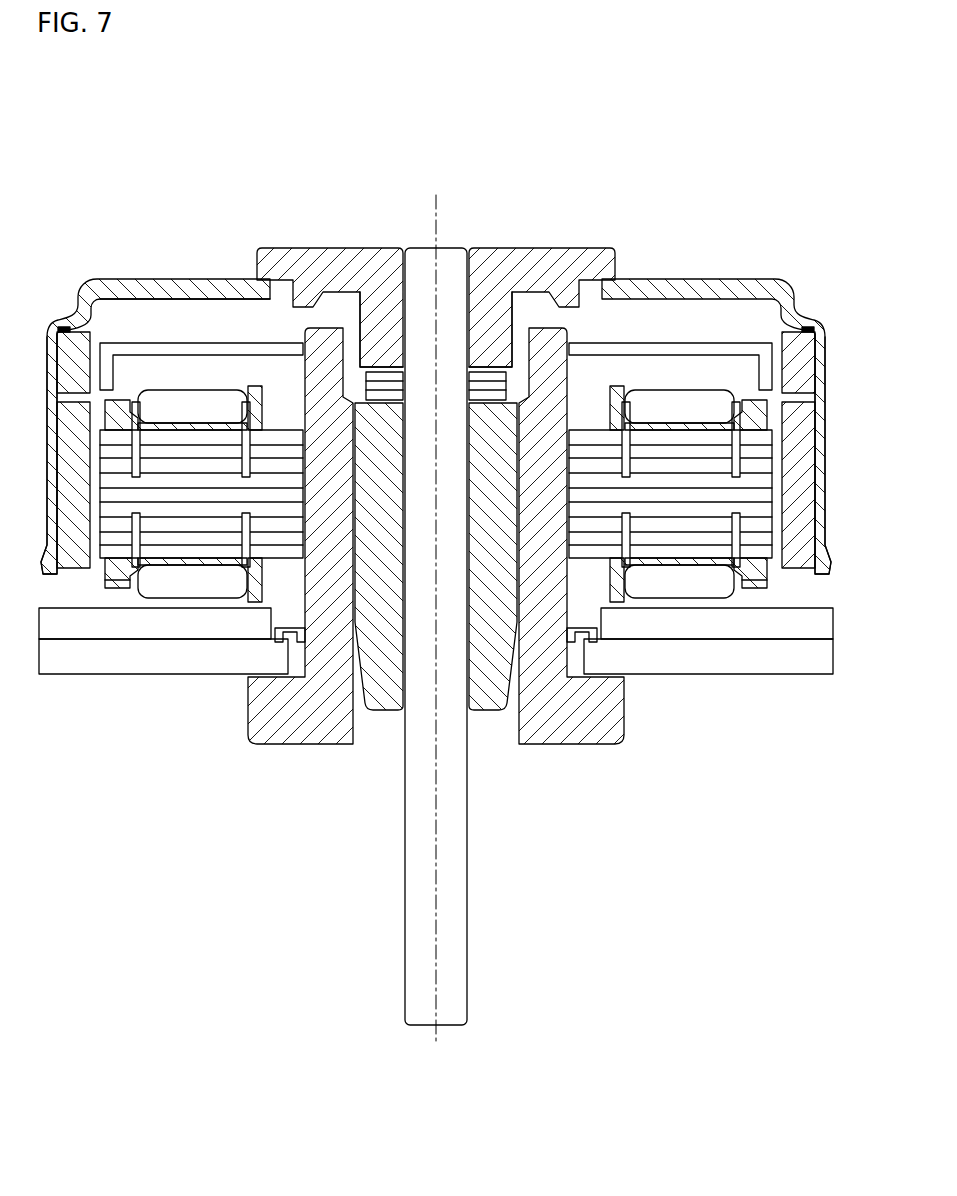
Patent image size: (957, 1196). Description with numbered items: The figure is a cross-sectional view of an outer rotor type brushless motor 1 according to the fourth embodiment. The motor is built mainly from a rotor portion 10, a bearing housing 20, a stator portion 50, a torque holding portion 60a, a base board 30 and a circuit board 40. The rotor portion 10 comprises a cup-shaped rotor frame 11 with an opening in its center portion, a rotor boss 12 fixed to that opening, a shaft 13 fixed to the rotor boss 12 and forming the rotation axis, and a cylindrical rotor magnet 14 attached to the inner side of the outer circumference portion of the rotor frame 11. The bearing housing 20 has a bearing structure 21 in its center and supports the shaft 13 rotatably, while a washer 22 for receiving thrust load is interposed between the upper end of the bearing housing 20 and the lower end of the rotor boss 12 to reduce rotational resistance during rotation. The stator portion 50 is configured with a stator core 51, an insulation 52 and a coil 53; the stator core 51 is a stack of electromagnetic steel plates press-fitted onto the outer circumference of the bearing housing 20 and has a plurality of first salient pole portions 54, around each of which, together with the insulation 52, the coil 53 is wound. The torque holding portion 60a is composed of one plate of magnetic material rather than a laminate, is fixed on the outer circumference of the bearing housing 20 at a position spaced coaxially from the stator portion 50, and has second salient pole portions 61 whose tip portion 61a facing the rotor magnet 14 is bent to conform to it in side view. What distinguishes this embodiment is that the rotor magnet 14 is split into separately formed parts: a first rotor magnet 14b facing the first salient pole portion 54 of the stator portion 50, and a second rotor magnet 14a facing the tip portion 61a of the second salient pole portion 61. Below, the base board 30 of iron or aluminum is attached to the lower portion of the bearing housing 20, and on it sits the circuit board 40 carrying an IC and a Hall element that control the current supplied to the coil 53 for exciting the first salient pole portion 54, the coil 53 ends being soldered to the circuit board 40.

The outer rotor type brushless motor 1 is at (449, 152).
The rotor portion 10 is at (847, 130).
The rotor frame 11 is at (717, 285).
The rotor boss 12 is at (562, 250).
The shaft 13 is at (453, 246).
The rotor magnet 14 is at (883, 186).
The second rotor magnet 14a is at (813, 345).
The first rotor magnet 14b is at (817, 440).
The bearing housing 20 is at (580, 732).
The bearing structure 21 is at (492, 693).
The washer 22 is at (385, 372).
The base board 30 is at (697, 660).
The circuit board 40 is at (795, 624).
The stator portion 50 is at (282, 835).
The stator core 51 is at (288, 537).
The insulation 52 is at (247, 595).
The coil 53 is at (168, 587).
The first salient pole portion 54 is at (170, 537).
The torque holding portion 60a is at (193, 340).
The second salient pole portion 61 is at (107, 378).
The tip portion 61a is at (90, 294).